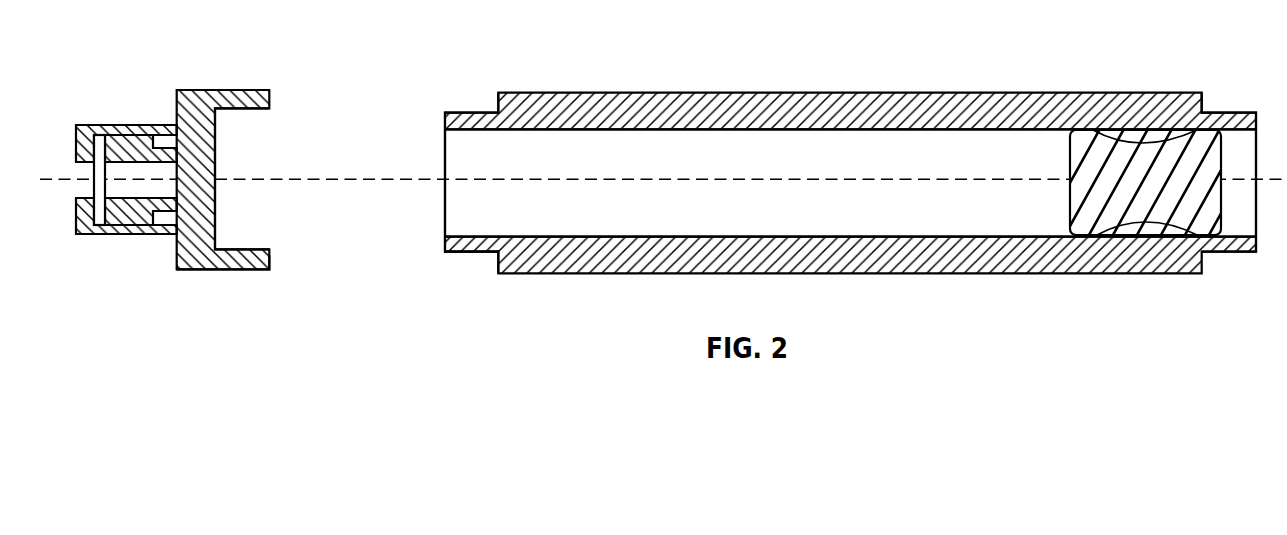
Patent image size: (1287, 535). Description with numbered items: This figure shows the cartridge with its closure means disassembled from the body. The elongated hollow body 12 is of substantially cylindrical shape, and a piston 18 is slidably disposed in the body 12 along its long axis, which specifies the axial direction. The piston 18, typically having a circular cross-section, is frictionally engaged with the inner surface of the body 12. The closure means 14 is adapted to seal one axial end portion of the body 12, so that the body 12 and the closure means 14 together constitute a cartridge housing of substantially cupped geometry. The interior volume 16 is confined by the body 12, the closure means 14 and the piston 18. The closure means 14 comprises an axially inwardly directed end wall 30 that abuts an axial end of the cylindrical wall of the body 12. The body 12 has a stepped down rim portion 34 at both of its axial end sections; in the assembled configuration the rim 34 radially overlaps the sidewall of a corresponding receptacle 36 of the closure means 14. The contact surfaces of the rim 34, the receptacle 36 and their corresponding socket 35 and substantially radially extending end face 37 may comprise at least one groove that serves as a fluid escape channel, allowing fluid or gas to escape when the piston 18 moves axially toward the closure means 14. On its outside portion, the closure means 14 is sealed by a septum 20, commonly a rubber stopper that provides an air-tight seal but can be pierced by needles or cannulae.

The body 12 is at (600, 112).
The closure means 14 is at (198, 90).
The interior volume 16 is at (732, 148).
The piston 18 is at (1135, 142).
The septum 20 is at (93, 176).
The end wall 30 is at (216, 120).
The stepped down rim portion 34 is at (463, 113).
The socket 35 is at (500, 260).
The receptacle 36 is at (293, 110).
The end face 37 is at (270, 263).